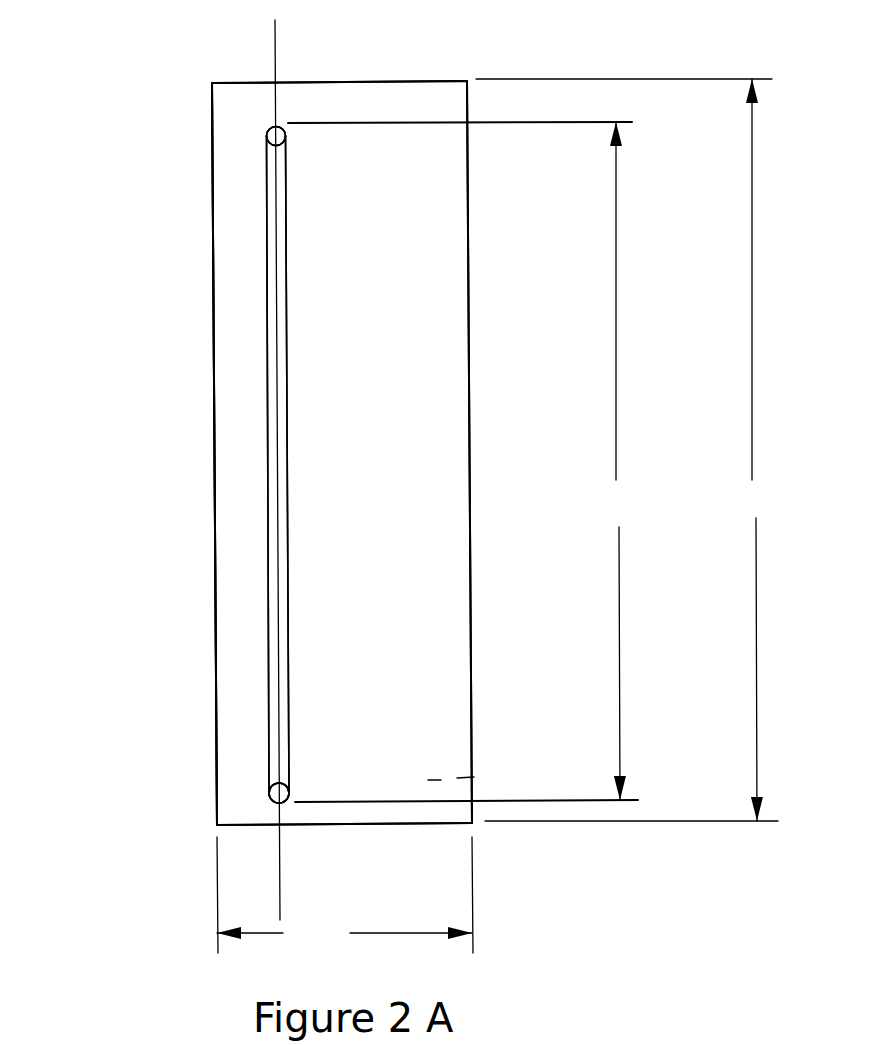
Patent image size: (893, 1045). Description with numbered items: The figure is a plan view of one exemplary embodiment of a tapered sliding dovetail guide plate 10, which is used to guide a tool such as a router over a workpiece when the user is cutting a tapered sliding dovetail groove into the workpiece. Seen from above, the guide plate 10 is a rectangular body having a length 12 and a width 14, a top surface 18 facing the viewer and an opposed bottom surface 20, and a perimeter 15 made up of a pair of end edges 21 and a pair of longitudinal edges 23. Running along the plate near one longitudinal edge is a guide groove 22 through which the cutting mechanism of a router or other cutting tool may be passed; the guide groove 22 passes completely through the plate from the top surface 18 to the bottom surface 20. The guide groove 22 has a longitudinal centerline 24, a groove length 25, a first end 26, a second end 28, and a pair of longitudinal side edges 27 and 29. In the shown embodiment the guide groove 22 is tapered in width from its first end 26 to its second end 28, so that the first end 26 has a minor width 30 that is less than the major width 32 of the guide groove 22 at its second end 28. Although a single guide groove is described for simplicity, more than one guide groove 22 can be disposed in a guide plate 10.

The tapered sliding dovetail guide plate 10 is at (476, 351).
The length 12 is at (628, 450).
The width 14 is at (345, 897).
The perimeter 15 is at (212, 285).
The top surface 18 is at (423, 657).
The bottom surface 20 is at (490, 766).
The end edges 21 is at (380, 82).
The guide groove 22 is at (298, 387).
The longitudinal edges 23 is at (213, 440).
The longitudinal centerline 24 is at (277, 64).
The groove length 25 is at (620, 461).
The first end 26 is at (264, 130).
The longitudinal side edge 27 is at (292, 605).
The second end 28 is at (270, 797).
The longitudinal side edge 29 is at (268, 563).
The minor width 30 is at (282, 137).
The major width 32 is at (283, 793).